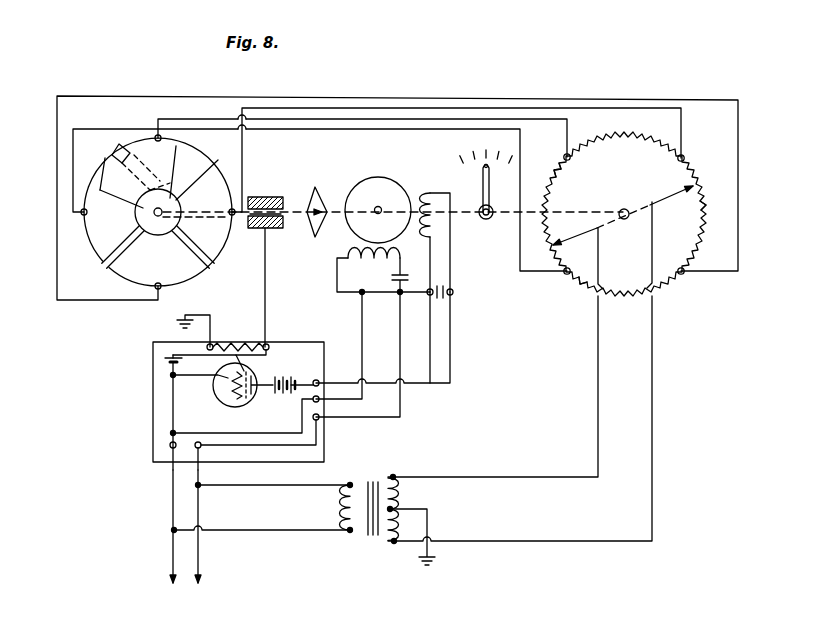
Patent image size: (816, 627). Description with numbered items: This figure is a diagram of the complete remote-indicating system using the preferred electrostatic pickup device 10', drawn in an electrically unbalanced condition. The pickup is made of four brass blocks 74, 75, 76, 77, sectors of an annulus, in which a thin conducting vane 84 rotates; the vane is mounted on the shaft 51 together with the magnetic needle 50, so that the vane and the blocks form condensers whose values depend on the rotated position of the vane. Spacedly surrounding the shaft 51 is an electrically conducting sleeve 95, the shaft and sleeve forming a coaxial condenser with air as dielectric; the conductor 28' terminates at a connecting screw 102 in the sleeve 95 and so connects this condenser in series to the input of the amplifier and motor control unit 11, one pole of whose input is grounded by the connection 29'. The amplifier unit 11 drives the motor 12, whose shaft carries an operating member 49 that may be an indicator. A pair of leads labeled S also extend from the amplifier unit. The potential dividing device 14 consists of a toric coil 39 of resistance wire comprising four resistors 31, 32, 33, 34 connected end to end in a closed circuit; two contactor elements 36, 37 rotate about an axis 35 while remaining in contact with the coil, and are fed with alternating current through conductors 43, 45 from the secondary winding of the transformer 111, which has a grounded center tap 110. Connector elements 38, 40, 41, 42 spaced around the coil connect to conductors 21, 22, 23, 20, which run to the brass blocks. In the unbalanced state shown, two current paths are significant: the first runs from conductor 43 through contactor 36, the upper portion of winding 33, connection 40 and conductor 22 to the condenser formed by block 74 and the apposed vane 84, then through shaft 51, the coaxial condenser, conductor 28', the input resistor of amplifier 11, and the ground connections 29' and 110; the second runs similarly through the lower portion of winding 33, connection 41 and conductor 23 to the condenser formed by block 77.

The electrostatic pickup device 10' is at (123, 213).
The brass block 74 is at (192, 157).
The brass block 75 is at (210, 178).
The brass block 76 is at (192, 282).
The brass block 77 is at (96, 250).
The vane 84 is at (118, 150).
The conductor 20 is at (105, 300).
The conductor 21 is at (243, 163).
The conductor 22 is at (198, 119).
The conductor 23 is at (105, 129).
The shaft 51 is at (270, 197).
The electrically conducting sleeve 95 is at (256, 229).
The connecting screw 102 is at (262, 222).
The magnetic needle 50 is at (315, 187).
The motor 12 is at (349, 178).
The operating member 49 is at (483, 182).
The connector element 40 is at (562, 153).
The connector element 38 is at (684, 156).
The connector element 41 is at (562, 275).
The connector element 42 is at (682, 275).
The potential dividing device 14 is at (648, 229).
The resistor 32 is at (628, 137).
The resistor 33 is at (556, 175).
The resistor 31 is at (705, 205).
The resistor 34 is at (590, 291).
The axis 35 is at (624, 208).
The contactor element 36 is at (560, 240).
The contactor element 37 is at (703, 166).
The toric coil 39 is at (623, 300).
The conductor 43 is at (599, 255).
The conductor 45 is at (653, 245).
The conductor 28' is at (289, 287).
The ground connection 29' is at (213, 325).
The amplifier and motor control unit 11 is at (150, 400).
The supply leads S is at (183, 535).
The transformer 111 is at (371, 540).
The grounded center tap 110 is at (428, 510).